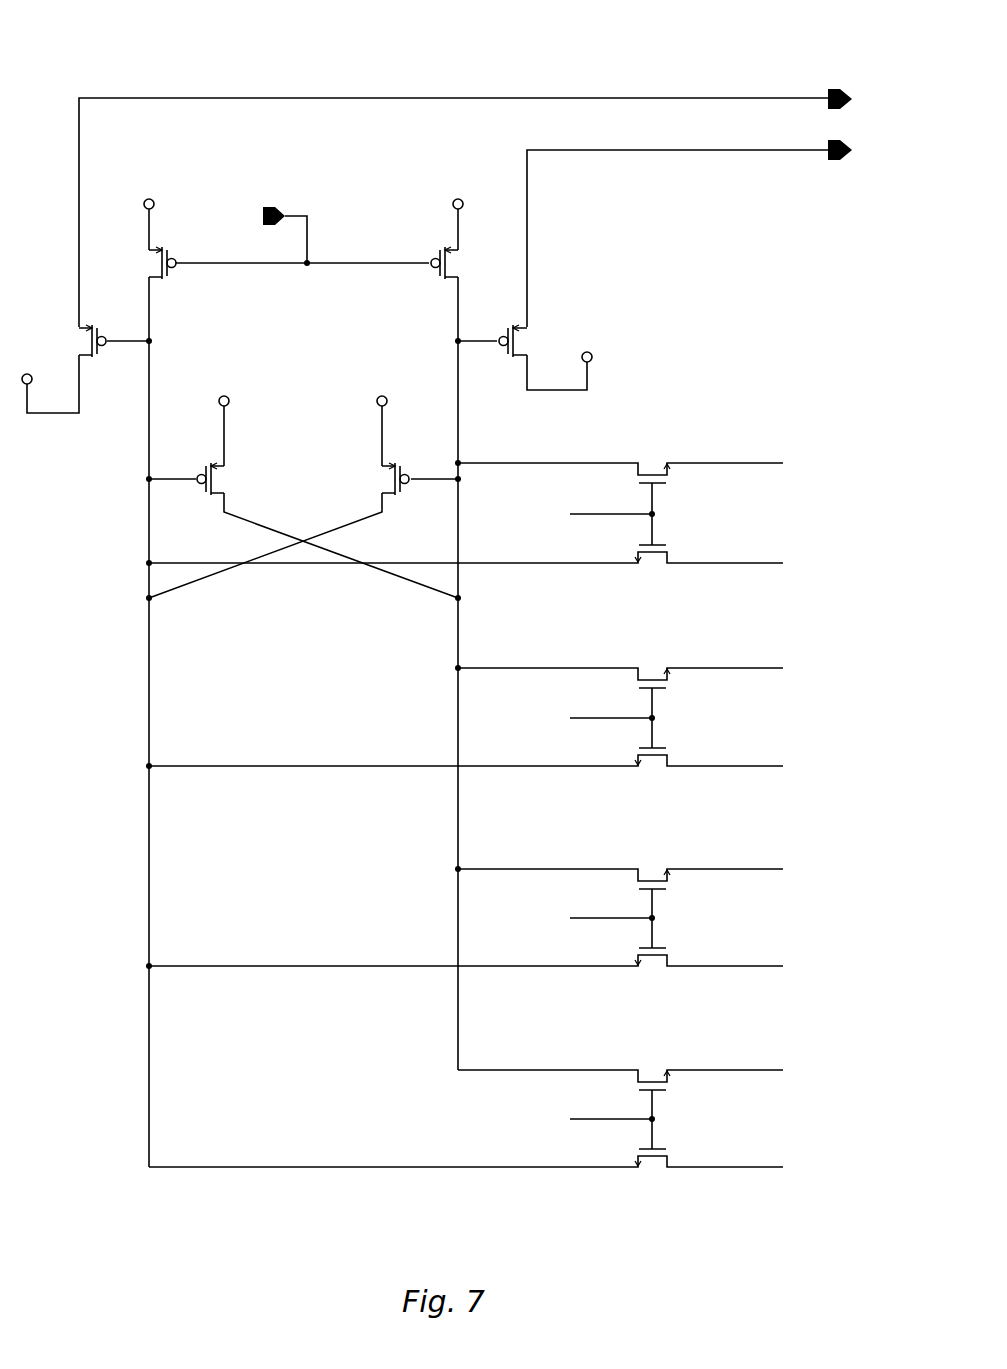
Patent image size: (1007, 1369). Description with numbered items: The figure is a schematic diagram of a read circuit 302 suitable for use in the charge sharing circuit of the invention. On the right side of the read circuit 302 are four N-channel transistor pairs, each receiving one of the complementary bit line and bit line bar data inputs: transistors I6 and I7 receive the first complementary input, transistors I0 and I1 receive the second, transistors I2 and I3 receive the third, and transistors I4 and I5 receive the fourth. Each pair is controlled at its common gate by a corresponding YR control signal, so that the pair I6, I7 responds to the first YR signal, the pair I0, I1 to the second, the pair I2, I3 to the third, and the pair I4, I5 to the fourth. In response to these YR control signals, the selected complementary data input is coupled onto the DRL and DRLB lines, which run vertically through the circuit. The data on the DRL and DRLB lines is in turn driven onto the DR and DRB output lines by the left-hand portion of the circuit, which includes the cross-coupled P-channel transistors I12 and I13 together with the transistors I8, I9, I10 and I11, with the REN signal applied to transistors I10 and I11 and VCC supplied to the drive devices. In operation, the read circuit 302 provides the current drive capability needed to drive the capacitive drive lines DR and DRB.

The read circuit 302 is at (43, 59).
The N-channel transistor I0 is at (620, 693).
The N-channel transistor I1 is at (466, 742).
The N-channel transistor I2 is at (620, 893).
The N-channel transistor I3 is at (466, 942).
The N-channel transistor I4 is at (466, 1143).
The N-channel transistor I5 is at (620, 1094).
The N-channel transistor I6 is at (620, 488).
The N-channel transistor I7 is at (466, 538).
The N-channel transistor I8 is at (502, 334).
The N-channel transistor I9 is at (102, 334).
The N-channel transistor I10 is at (430, 256).
The N-channel transistor I11 is at (178, 256).
The cross-coupled P-channel transistor I12 is at (411, 472).
The cross-coupled P-channel transistor I13 is at (197, 472).